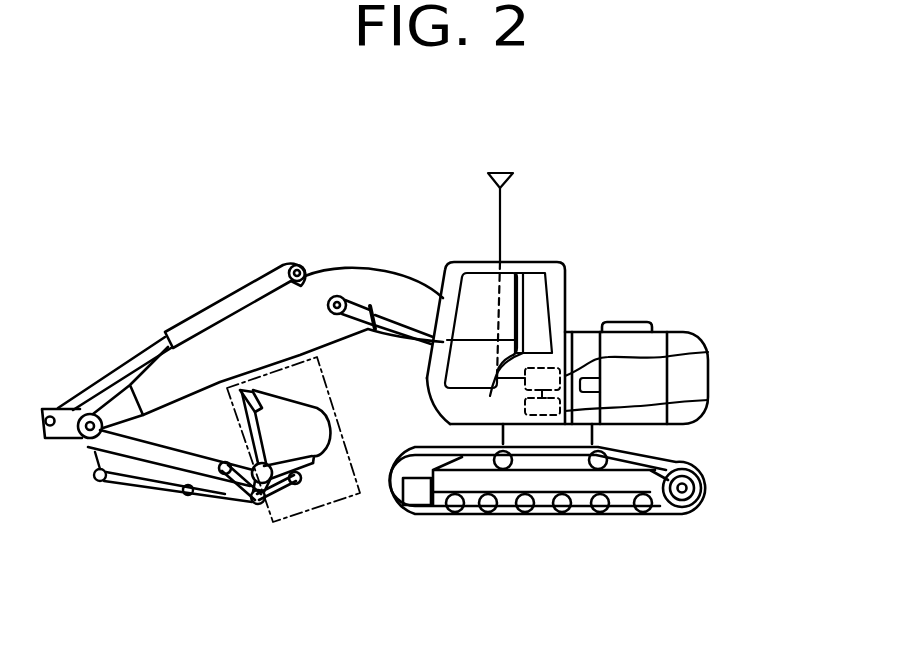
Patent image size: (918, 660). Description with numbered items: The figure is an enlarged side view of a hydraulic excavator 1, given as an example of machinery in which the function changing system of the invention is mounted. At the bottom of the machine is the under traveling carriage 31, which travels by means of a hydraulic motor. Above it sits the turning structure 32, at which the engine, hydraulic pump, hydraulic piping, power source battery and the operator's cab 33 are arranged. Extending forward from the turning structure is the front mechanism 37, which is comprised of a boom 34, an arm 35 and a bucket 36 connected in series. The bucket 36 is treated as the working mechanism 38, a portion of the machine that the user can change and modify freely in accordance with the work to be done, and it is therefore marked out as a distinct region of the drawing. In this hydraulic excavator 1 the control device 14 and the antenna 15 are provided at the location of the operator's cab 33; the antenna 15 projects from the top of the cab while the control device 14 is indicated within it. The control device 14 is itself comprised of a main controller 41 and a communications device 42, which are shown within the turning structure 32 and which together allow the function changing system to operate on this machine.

The hydraulic excavator 1 is at (636, 252).
The control device 14 is at (512, 398).
The antenna 15 is at (516, 177).
The under traveling carriage 31 is at (715, 487).
The turning structure 32 is at (686, 336).
The operator's cab 33 is at (508, 284).
The boom 34 is at (386, 272).
The arm 35 is at (70, 447).
The bucket 36 is at (335, 405).
The front mechanism 37 is at (160, 500).
The working mechanism 38 is at (305, 514).
The main controller 41 is at (710, 403).
The communications device 42 is at (710, 350).